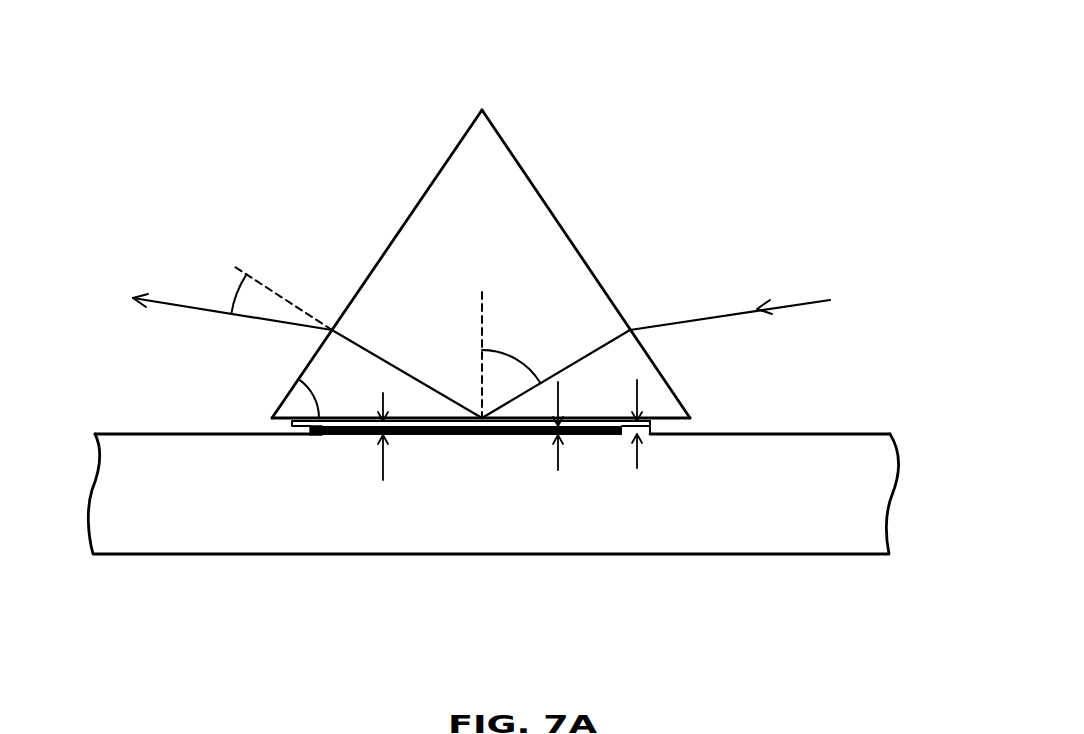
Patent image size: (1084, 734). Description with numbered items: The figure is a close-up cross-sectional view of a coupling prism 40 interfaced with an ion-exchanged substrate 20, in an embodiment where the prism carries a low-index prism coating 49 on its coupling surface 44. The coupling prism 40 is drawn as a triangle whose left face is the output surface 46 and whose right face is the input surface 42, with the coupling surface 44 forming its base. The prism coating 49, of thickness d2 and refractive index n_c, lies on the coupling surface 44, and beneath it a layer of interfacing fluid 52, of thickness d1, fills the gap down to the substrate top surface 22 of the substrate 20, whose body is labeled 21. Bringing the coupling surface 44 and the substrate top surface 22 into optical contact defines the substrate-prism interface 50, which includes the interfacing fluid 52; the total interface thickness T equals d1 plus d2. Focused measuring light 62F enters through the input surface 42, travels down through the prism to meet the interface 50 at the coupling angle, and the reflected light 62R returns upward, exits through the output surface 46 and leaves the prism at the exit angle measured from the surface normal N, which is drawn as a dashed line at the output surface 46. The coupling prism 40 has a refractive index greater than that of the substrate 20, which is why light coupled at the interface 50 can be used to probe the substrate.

The coupling prism 40 is at (428, 239).
The input surface 42 is at (525, 174).
The coupling surface 44 is at (293, 421).
The output surface 46 is at (437, 176).
The low-index coating 49 is at (657, 436).
The substrate-prism interface 50 is at (515, 440).
The interfacing fluid 52 is at (362, 435).
The substrate 20 is at (523, 445).
The substrate body 21 is at (767, 507).
The substrate top surface 22 is at (750, 434).
The focused measuring light 62F is at (807, 303).
The reflected light 62R is at (165, 305).
The surface normal N is at (245, 272).
The interfacing fluid thickness d1 is at (383, 468).
The prism coating thickness d2 is at (637, 391).
The total interface thickness T is at (558, 465).